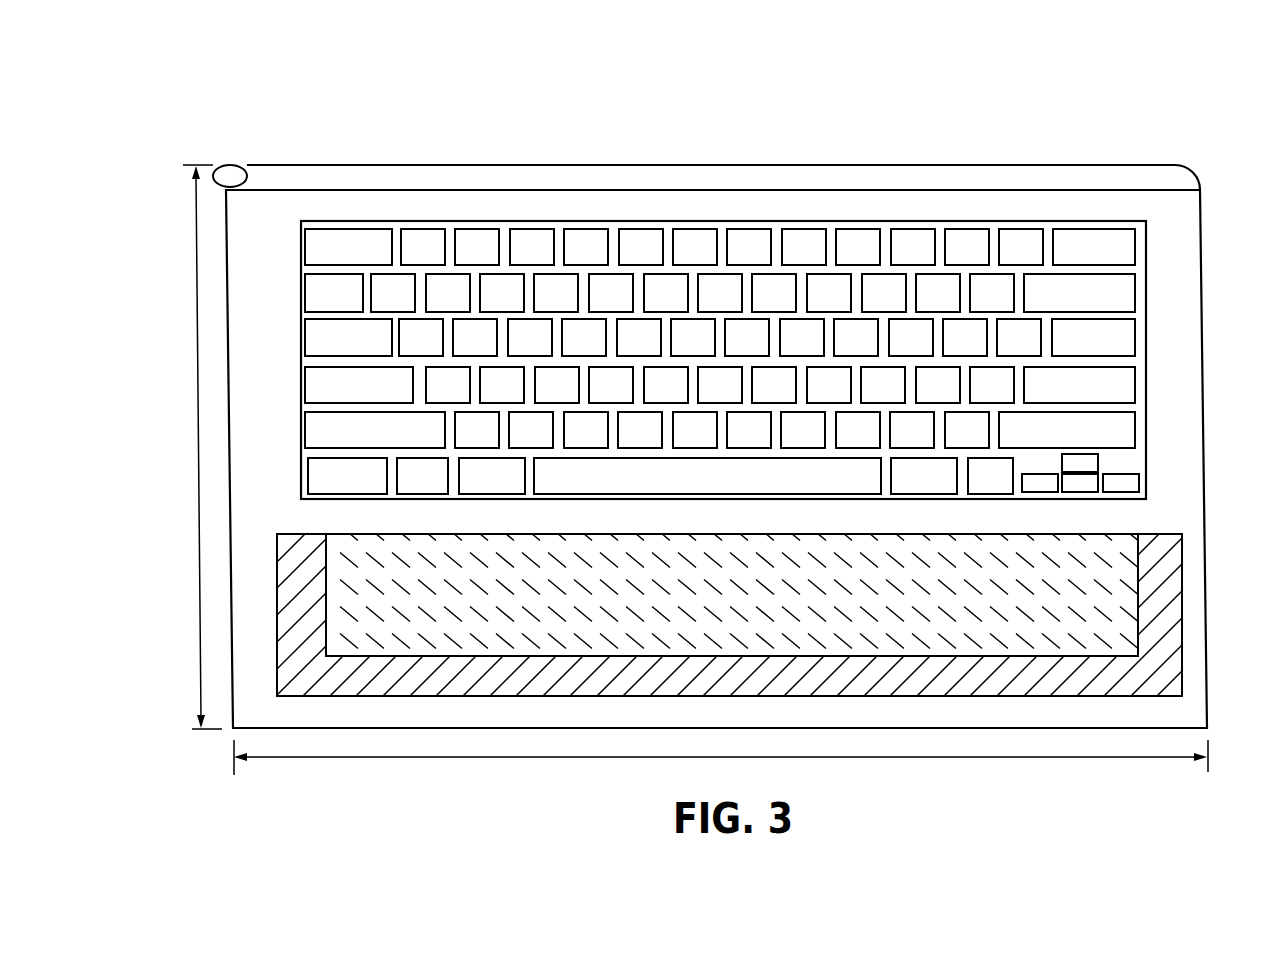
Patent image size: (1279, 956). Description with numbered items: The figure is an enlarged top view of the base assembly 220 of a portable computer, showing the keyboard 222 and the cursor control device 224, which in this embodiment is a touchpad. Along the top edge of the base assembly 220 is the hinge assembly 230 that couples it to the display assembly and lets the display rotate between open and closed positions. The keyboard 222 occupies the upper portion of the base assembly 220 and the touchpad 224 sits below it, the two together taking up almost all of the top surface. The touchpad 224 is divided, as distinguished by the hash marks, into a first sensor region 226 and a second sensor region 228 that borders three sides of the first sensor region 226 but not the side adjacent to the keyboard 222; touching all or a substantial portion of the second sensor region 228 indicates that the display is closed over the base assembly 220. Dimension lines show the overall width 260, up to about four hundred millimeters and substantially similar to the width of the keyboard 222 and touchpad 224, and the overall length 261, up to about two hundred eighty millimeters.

The base assembly 220 is at (214, 130).
The keyboard 222 is at (700, 253).
The cursor control device 224 is at (1148, 514).
The first sensor region 226 is at (1092, 582).
The second sensor region 228 is at (1160, 638).
The hinge assembly 230 is at (363, 177).
The overall width 260 is at (853, 760).
The overall length 261 is at (197, 352).